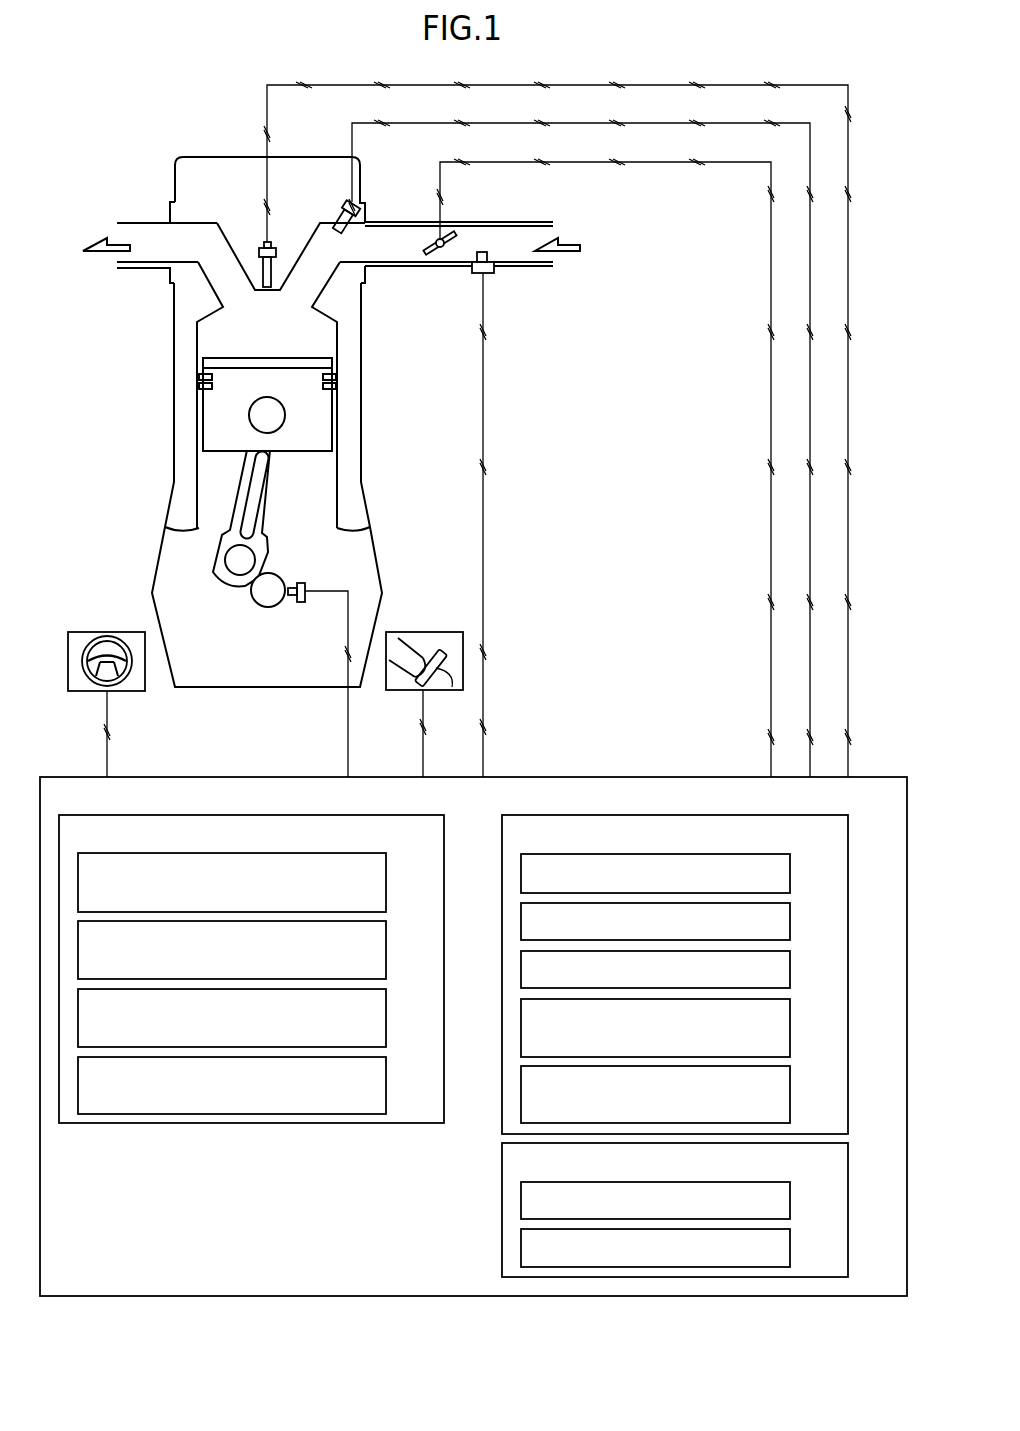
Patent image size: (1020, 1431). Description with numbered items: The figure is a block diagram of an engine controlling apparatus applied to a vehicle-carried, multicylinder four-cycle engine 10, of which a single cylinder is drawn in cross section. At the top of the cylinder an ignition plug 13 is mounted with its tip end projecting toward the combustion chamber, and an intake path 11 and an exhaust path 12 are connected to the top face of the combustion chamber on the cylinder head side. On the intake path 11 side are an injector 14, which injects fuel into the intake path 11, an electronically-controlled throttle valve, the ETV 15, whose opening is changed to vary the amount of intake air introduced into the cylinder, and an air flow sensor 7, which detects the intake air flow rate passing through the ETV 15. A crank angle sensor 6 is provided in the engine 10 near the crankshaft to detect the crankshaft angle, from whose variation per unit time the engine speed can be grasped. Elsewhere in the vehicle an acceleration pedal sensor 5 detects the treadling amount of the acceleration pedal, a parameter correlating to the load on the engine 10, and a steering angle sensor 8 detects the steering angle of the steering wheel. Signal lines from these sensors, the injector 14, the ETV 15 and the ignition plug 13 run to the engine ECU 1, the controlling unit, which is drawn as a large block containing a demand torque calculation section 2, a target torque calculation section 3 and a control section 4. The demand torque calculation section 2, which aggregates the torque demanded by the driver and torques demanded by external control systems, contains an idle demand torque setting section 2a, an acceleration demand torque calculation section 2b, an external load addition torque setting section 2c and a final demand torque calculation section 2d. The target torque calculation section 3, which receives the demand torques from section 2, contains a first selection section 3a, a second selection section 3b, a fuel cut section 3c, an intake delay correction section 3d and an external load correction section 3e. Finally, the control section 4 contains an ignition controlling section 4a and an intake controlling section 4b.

The engine ECU 1 is at (548, 777).
The demand torque calculation section 2 is at (444, 838).
The idle demand torque setting section 2a is at (386, 886).
The acceleration demand torque calculation section 2b is at (386, 954).
The external load addition torque setting section 2c is at (386, 1021).
The final demand torque calculation section 2d is at (386, 1089).
The target torque calculation section 3 is at (848, 838).
The first selection section 3a is at (790, 876).
The second selection section 3b is at (790, 923).
The fuel cut section 3c is at (790, 971).
The intake delay correction section 3d is at (790, 1029).
The external load correction section 3e is at (790, 1096).
The control section 4 is at (848, 1172).
The ignition controlling section 4a is at (790, 1204).
The intake controlling section 4b is at (790, 1251).
The acceleration pedal sensor 5 is at (425, 632).
The crank angle sensor 6 is at (301, 582).
The air flow sensor 7 is at (494, 274).
The steering angle sensor 8 is at (107, 632).
The engine 10 is at (152, 147).
The intake path 11 is at (503, 222).
The exhaust path 12 is at (137, 222).
The ignition plug 13 is at (263, 272).
The injector 14 is at (338, 206).
The ETV (electric throttle valve) 15 is at (443, 248).